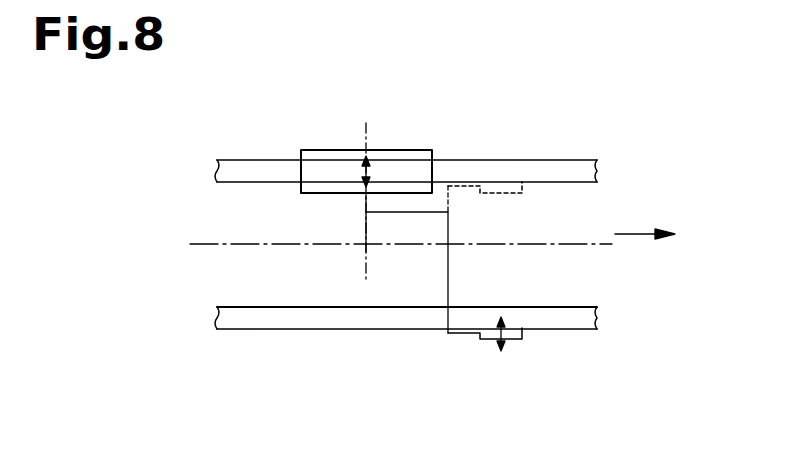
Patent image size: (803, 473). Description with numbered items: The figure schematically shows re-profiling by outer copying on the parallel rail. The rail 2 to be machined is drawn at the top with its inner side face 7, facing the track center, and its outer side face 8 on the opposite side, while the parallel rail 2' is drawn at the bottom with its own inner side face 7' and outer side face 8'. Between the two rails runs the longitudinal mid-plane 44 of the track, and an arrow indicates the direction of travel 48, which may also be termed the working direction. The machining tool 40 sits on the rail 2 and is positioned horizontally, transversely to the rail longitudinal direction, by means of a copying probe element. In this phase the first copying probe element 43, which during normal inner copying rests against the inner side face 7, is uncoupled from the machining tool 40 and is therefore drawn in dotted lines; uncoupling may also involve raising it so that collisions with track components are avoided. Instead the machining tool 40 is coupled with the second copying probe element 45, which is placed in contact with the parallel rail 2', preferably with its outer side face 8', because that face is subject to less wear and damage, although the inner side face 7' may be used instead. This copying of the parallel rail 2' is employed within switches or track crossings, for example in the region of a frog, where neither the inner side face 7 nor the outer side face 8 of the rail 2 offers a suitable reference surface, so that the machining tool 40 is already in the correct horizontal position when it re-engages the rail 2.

The rail 2 is at (347, 130).
The inner side face 7 is at (347, 202).
The outer side face 8 is at (407, 99).
The parallel rail 2' is at (343, 352).
The inner side face of the parallel rail 7' is at (346, 288).
The outer side face of the parallel rail 8' is at (359, 382).
The machining tool 40 is at (324, 157).
The first copying probe element 43 is at (513, 188).
The longitudinal mid-plane 44 is at (583, 245).
The second copying probe element 45 is at (512, 337).
The direction of travel 48 is at (633, 232).